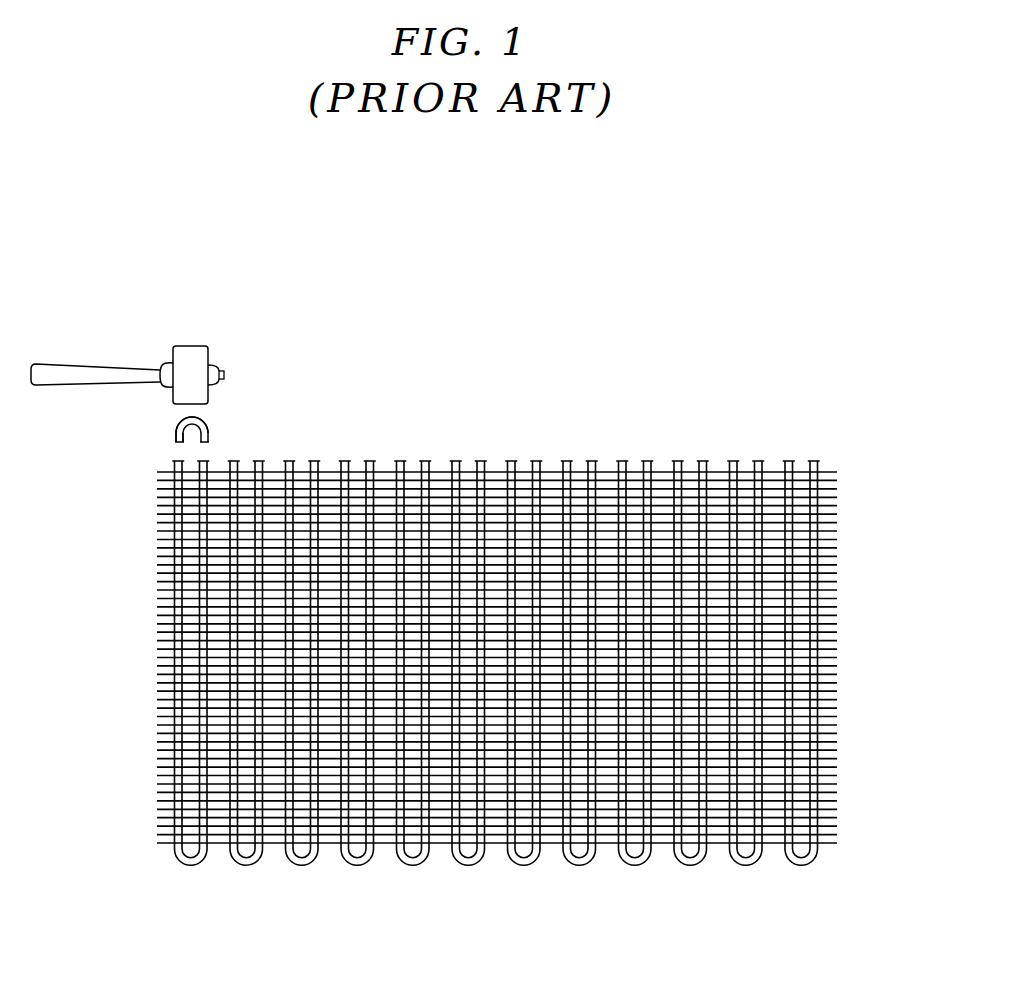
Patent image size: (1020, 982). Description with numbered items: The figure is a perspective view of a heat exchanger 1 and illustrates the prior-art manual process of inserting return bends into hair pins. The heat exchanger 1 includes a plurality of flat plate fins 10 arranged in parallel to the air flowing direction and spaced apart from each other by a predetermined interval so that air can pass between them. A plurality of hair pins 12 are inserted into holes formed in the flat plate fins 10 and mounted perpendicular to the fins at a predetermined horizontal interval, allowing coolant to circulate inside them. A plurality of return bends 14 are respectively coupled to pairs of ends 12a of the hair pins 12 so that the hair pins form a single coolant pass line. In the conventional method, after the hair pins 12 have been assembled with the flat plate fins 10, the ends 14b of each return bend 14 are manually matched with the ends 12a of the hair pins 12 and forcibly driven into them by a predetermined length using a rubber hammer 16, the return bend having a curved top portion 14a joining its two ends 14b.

The heat exchanger 1 is at (512, 694).
The flat plate fins 10 is at (835, 663).
The hair pins 12 is at (183, 865).
The ends of the hair pins 12a is at (207, 463).
The return bends 14 is at (207, 434).
The clip top 14a is at (181, 438).
The ends of the return bend 14b is at (178, 444).
The hammer 16 is at (187, 343).